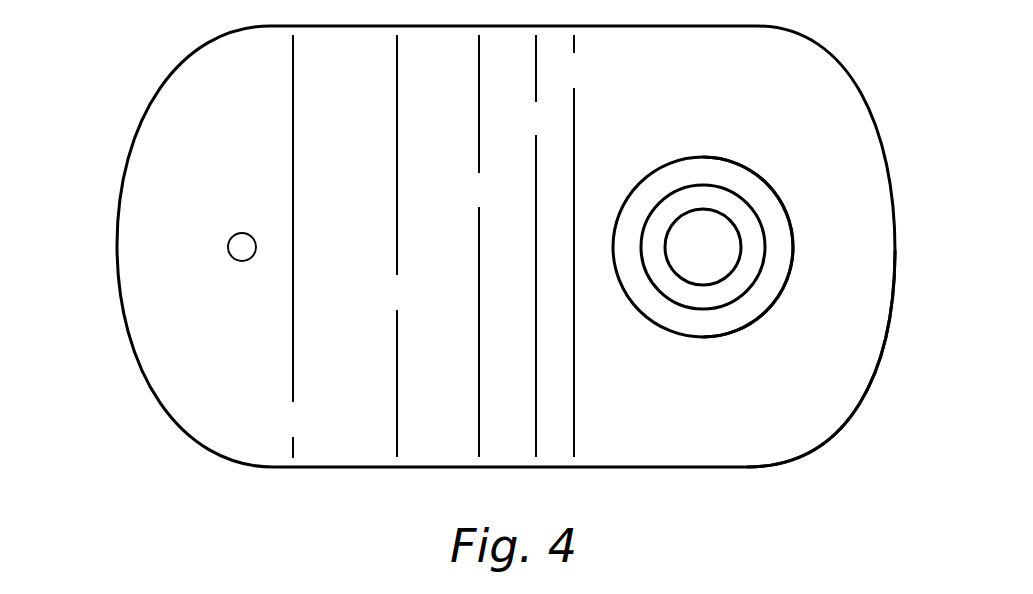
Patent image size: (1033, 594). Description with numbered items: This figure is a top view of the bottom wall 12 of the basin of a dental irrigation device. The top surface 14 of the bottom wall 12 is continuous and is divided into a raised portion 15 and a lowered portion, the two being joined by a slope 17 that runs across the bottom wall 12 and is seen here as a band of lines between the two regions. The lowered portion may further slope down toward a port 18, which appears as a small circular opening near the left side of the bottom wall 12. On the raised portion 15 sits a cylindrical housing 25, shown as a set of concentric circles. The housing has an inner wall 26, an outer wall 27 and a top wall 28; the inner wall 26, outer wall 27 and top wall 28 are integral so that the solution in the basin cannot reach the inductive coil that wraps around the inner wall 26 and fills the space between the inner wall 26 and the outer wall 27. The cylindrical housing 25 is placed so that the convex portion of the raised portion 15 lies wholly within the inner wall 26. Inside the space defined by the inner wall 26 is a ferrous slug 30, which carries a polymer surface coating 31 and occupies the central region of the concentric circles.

The bottom wall 12 is at (213, 109).
The top surface 14 is at (787, 412).
The raised portion 15 is at (738, 425).
The slope 17 is at (513, 409).
The port 18 is at (232, 240).
The cylindrical housing 25 is at (732, 158).
The inner wall 26 is at (757, 213).
The outer wall 27 is at (755, 170).
The top wall 28 is at (773, 276).
The ferrous slug 30 is at (740, 255).
The polymer surface coating 31 is at (688, 260).